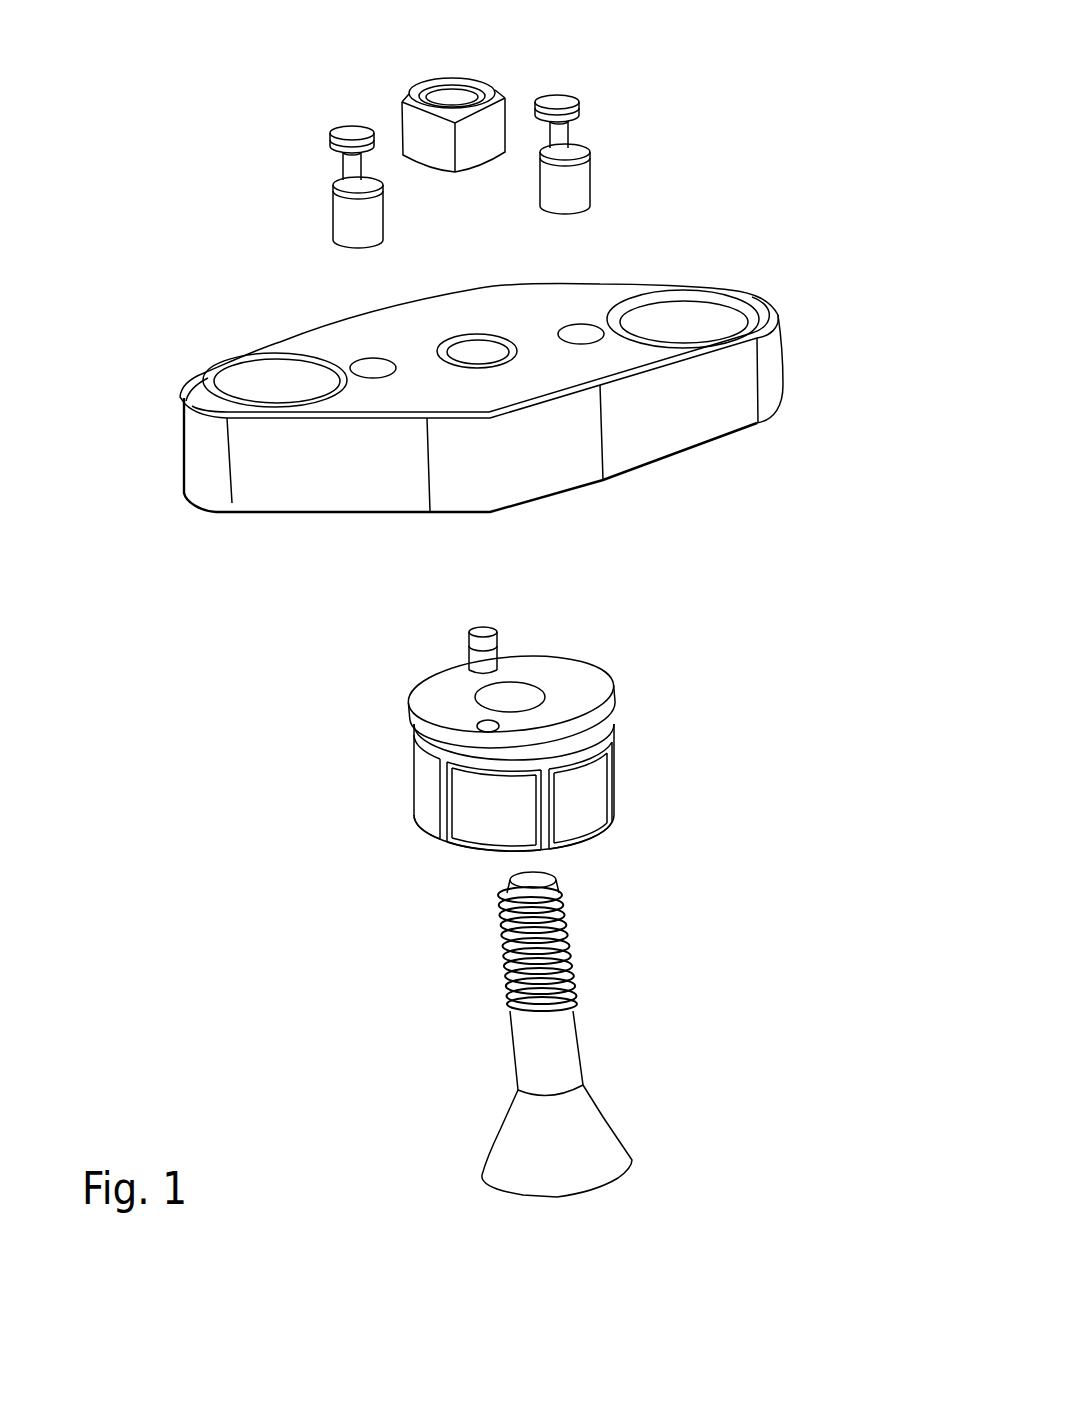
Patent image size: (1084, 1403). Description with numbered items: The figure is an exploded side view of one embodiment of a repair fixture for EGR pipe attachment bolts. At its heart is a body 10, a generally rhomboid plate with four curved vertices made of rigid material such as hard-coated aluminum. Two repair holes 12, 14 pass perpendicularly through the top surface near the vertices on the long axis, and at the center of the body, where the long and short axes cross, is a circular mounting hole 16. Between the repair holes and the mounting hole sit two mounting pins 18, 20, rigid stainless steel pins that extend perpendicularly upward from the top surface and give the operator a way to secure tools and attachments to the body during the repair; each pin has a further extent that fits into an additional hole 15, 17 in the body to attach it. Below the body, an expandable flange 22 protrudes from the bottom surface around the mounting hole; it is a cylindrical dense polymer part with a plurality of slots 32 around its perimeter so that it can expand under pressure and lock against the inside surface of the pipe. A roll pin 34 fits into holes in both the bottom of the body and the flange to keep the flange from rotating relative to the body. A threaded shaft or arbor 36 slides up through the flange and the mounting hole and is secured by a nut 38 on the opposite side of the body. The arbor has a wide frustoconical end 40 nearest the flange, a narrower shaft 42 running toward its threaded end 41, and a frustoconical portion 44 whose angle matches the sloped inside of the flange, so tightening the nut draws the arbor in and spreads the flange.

The body 10 is at (454, 404).
The repair hole 12 is at (277, 387).
The repair hole 14 is at (683, 320).
The additional hole 15 is at (371, 367).
The mounting hole 16 is at (480, 352).
The additional hole 17 is at (584, 332).
The mounting pin 18 is at (353, 217).
The mounting pin 20 is at (577, 178).
The expandable flange 22 is at (508, 707).
The slots 32 is at (624, 778).
The roll pin 34 is at (483, 653).
The threaded shaft or arbor 36 is at (537, 1042).
The nut 38 is at (490, 133).
The frustoconical end 40 is at (538, 1046).
The threaded end 41 is at (529, 878).
The shaft 42 is at (582, 1028).
The frustoconical portion 44 is at (494, 1138).